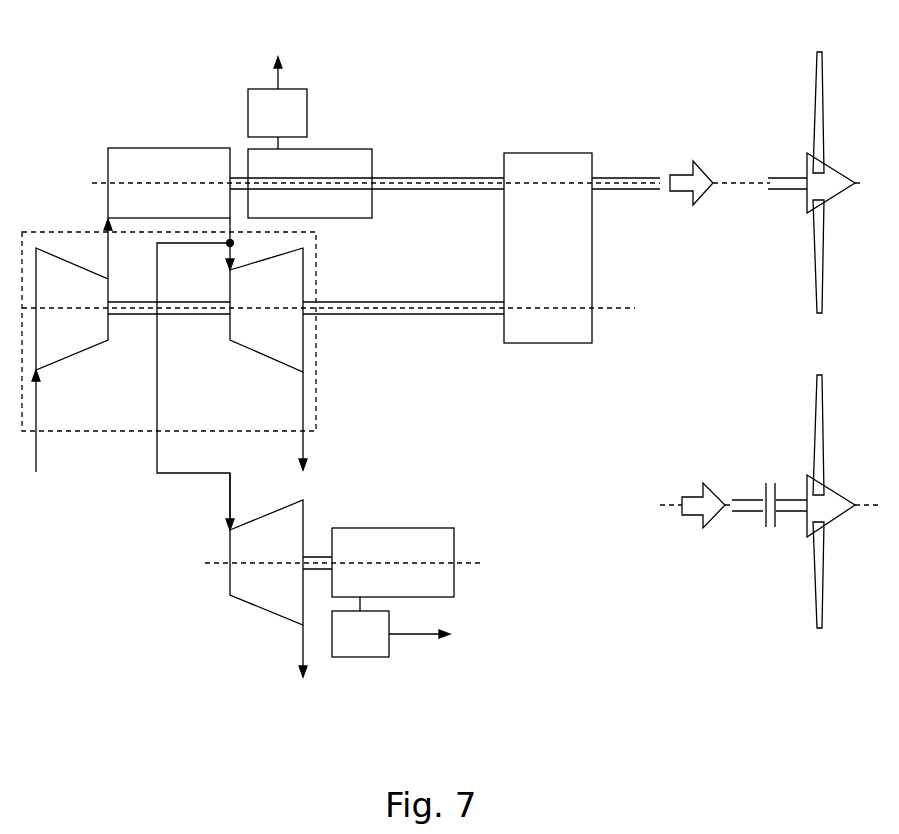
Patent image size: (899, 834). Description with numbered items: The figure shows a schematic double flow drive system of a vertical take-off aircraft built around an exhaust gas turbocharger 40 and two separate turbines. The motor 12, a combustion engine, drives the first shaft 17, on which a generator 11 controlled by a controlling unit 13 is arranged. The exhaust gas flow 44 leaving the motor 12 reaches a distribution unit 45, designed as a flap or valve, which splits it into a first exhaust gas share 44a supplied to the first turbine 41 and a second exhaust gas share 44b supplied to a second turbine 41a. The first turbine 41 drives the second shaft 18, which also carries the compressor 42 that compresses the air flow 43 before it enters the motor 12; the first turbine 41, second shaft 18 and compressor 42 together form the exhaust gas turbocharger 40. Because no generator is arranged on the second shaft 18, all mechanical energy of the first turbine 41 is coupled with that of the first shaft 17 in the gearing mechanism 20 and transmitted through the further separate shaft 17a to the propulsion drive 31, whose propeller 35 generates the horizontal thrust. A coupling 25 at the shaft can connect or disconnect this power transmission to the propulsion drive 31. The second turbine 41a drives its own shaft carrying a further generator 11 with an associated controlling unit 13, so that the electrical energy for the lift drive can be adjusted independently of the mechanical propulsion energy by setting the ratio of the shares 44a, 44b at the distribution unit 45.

The generator 11 is at (352, 165).
The motor 12 is at (152, 165).
The controlling unit 13 is at (297, 97).
The first shaft 17 is at (440, 183).
The further separate shaft 17a is at (613, 178).
The second shaft 18 is at (492, 308).
The gearing mechanism 20 is at (575, 237).
The coupling 25 is at (765, 475).
The propulsion drive 31 is at (790, 98).
The propeller 35 is at (815, 243).
The exhaust gas turbocharger 40 is at (100, 443).
The first turbine 41 is at (272, 325).
The second turbine 41a is at (237, 587).
The compressor 42 is at (70, 277).
The air flow 43 is at (37, 453).
The exhaust gas flow 44 is at (228, 228).
The first exhaust gas share 44a is at (228, 253).
The second exhaust gas share 44b is at (162, 474).
The distribution unit 45 is at (220, 250).